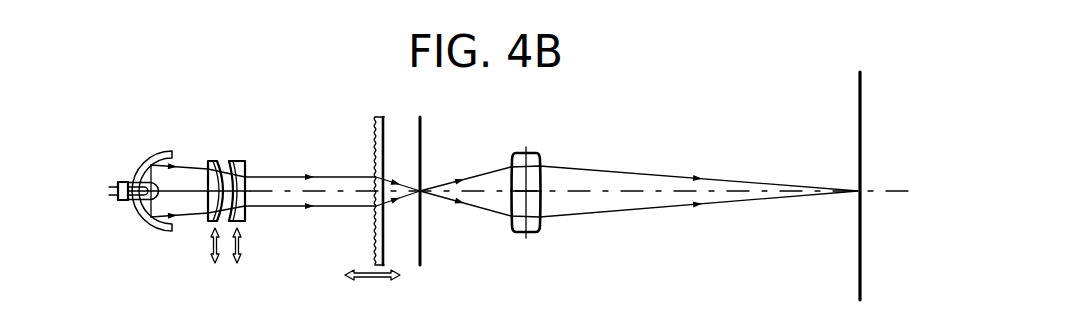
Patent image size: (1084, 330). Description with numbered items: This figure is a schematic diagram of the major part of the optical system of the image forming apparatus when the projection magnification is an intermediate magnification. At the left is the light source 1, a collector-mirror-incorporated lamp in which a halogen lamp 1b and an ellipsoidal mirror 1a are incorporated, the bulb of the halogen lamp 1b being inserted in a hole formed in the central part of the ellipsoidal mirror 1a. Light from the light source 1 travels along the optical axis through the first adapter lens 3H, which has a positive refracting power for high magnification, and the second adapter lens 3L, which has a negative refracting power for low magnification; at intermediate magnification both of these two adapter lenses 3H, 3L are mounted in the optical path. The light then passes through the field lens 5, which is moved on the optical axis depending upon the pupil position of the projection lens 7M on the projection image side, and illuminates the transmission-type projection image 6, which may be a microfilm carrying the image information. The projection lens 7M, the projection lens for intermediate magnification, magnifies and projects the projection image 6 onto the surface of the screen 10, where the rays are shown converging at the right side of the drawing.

The light source 1 is at (168, 115).
The ellipsoidal mirror 1a is at (148, 159).
The halogen lamp 1b is at (121, 182).
The first adapter lens 3H is at (215, 158).
The second adapter lens 3L is at (240, 158).
The field lens 5 is at (375, 120).
The projection image 6 is at (421, 130).
The projection lens for intermediate magnification 7M is at (530, 151).
The screen 10 is at (862, 122).